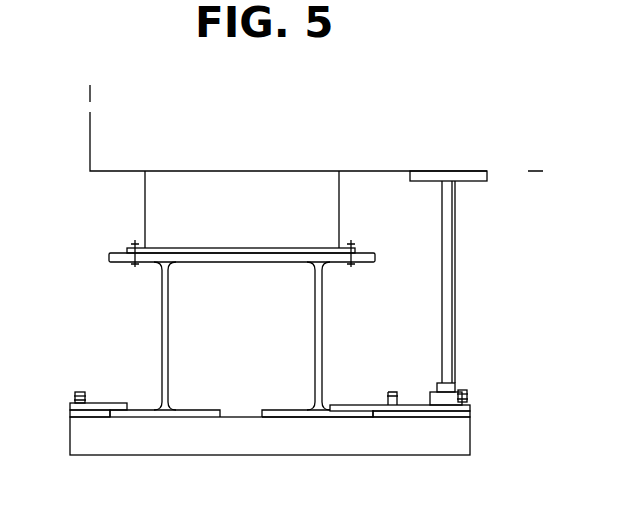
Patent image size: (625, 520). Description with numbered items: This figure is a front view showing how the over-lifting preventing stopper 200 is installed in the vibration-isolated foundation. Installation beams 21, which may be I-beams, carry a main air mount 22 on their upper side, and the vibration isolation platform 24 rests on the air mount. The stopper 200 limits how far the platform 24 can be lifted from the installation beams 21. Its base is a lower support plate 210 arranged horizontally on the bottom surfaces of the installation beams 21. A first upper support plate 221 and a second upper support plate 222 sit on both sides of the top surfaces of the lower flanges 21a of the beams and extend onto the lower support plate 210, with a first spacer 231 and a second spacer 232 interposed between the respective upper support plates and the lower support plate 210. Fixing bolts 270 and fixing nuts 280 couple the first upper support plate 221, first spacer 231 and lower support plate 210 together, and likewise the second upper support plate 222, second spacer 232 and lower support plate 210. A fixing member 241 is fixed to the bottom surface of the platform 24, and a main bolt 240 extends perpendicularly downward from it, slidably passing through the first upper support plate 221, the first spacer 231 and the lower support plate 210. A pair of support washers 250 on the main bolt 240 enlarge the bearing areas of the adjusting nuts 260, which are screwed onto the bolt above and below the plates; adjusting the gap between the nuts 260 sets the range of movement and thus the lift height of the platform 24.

The vibration isolation platform 24 is at (97, 140).
The main air mount 22 is at (150, 208).
The installation beam 21 is at (160, 309).
The lower flange 21a is at (198, 405).
The fixing member 241 is at (477, 182).
The main bolt 240 is at (455, 258).
The adjusting nut 260 is at (455, 383).
The support washer 250 is at (428, 394).
The fixing bolt 270 is at (470, 390).
The fixing nut 280 is at (470, 402).
The first upper support plate 221 is at (352, 403).
The first spacer 231 is at (475, 418).
The second upper support plate 222 is at (100, 402).
The second spacer 232 is at (80, 418).
The lower support plate 210 is at (407, 442).
The over-lifting preventing stopper 200 is at (520, 294).